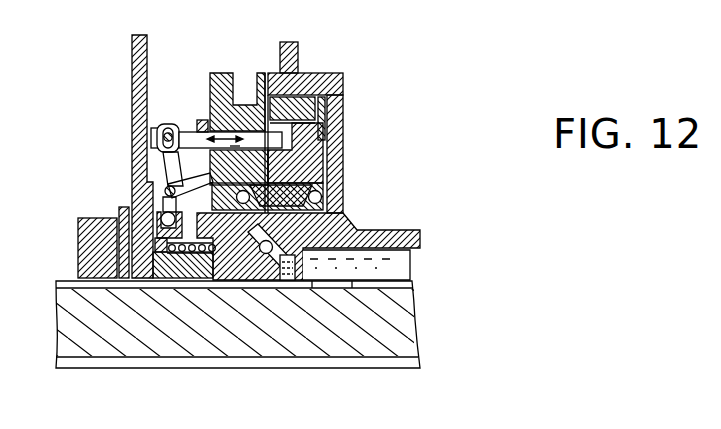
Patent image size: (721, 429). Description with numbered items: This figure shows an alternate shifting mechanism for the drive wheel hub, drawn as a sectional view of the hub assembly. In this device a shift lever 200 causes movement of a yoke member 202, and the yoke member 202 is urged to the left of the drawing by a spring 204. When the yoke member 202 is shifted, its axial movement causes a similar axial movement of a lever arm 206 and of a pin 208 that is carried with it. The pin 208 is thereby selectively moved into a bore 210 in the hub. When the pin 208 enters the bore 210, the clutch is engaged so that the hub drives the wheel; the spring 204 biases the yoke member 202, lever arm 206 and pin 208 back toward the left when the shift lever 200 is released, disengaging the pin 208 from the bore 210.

The shift lever 200 is at (147, 50).
The yoke member 202 is at (166, 232).
The spring 204 is at (210, 254).
The lever arm 206 is at (173, 126).
The pin 208 is at (195, 128).
The bore 210 is at (291, 143).